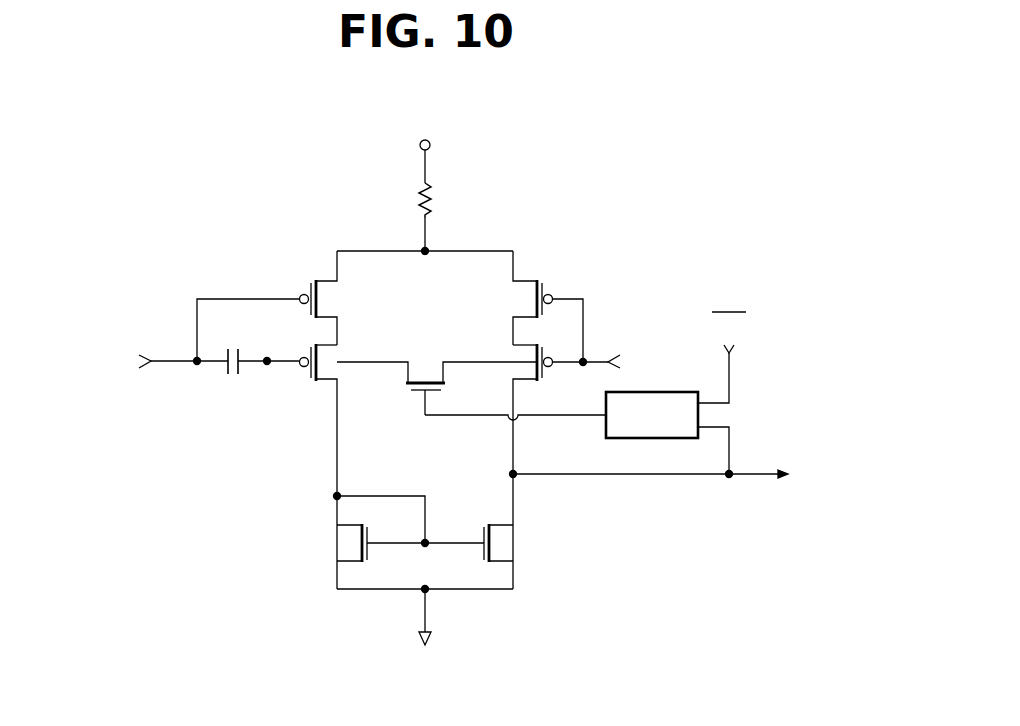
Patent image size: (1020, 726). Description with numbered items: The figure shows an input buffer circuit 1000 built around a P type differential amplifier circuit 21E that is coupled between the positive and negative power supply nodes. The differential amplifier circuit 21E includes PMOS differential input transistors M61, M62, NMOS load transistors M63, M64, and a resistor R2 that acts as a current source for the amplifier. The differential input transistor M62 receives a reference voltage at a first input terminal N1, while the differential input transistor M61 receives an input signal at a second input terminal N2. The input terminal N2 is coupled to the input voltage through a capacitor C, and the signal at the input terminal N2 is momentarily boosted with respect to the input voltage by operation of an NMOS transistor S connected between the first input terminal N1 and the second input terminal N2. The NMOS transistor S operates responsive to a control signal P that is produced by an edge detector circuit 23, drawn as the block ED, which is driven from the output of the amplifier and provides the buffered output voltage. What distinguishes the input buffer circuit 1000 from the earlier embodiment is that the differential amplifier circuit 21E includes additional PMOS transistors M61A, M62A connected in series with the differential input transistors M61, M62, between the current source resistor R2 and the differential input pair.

The input buffer circuit 1000 is at (136, 77).
The differential amplifier circuit 21E is at (590, 250).
The edge detector circuit 23 is at (606, 432).
The resistor R2 is at (443, 200).
The PMOS transistor M61A is at (344, 312).
The PMOS transistor M62A is at (519, 321).
The PMOS differential input transistor M61 is at (310, 466).
The PMOS differential input transistor M62 is at (560, 466).
The NMOS load transistor M63 is at (330, 543).
The NMOS load transistor M64 is at (515, 543).
The capacitor C is at (232, 377).
The NMOS transistor S is at (437, 376).
The control signal P is at (515, 430).
The input terminal N1 is at (599, 348).
The input terminal N2 is at (260, 348).
The edge detector block ED is at (652, 415).